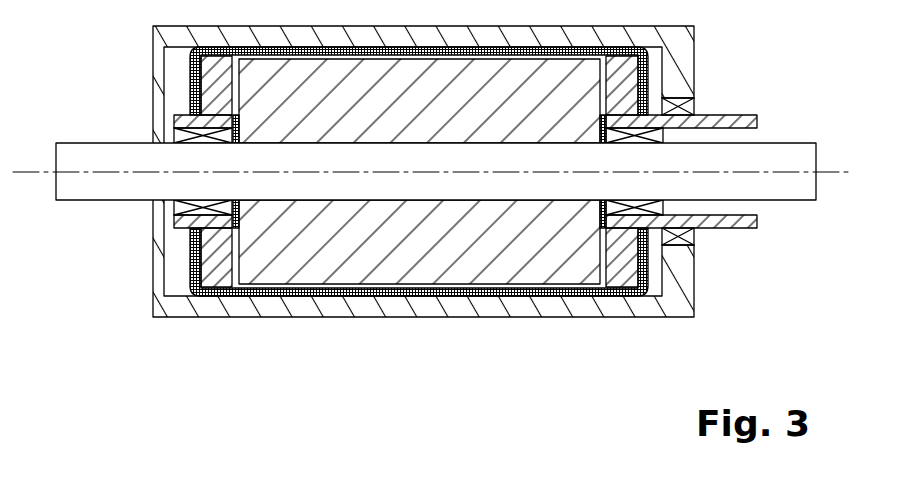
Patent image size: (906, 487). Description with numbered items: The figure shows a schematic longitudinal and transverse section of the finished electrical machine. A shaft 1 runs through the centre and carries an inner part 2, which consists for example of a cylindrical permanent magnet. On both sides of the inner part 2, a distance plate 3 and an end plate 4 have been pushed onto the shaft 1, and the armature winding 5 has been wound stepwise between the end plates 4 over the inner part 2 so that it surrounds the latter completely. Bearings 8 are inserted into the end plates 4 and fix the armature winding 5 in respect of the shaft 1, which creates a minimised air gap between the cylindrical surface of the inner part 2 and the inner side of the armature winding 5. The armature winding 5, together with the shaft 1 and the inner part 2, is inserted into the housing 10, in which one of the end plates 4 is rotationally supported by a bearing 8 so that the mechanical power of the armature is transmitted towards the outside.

The shaft 1 is at (78, 192).
The inner part 2 is at (307, 277).
The distance plate 3 is at (240, 228).
The end plate 4 is at (217, 277).
The armature winding 5 is at (380, 293).
The bearing 8 is at (692, 105).
The housing 10 is at (463, 308).